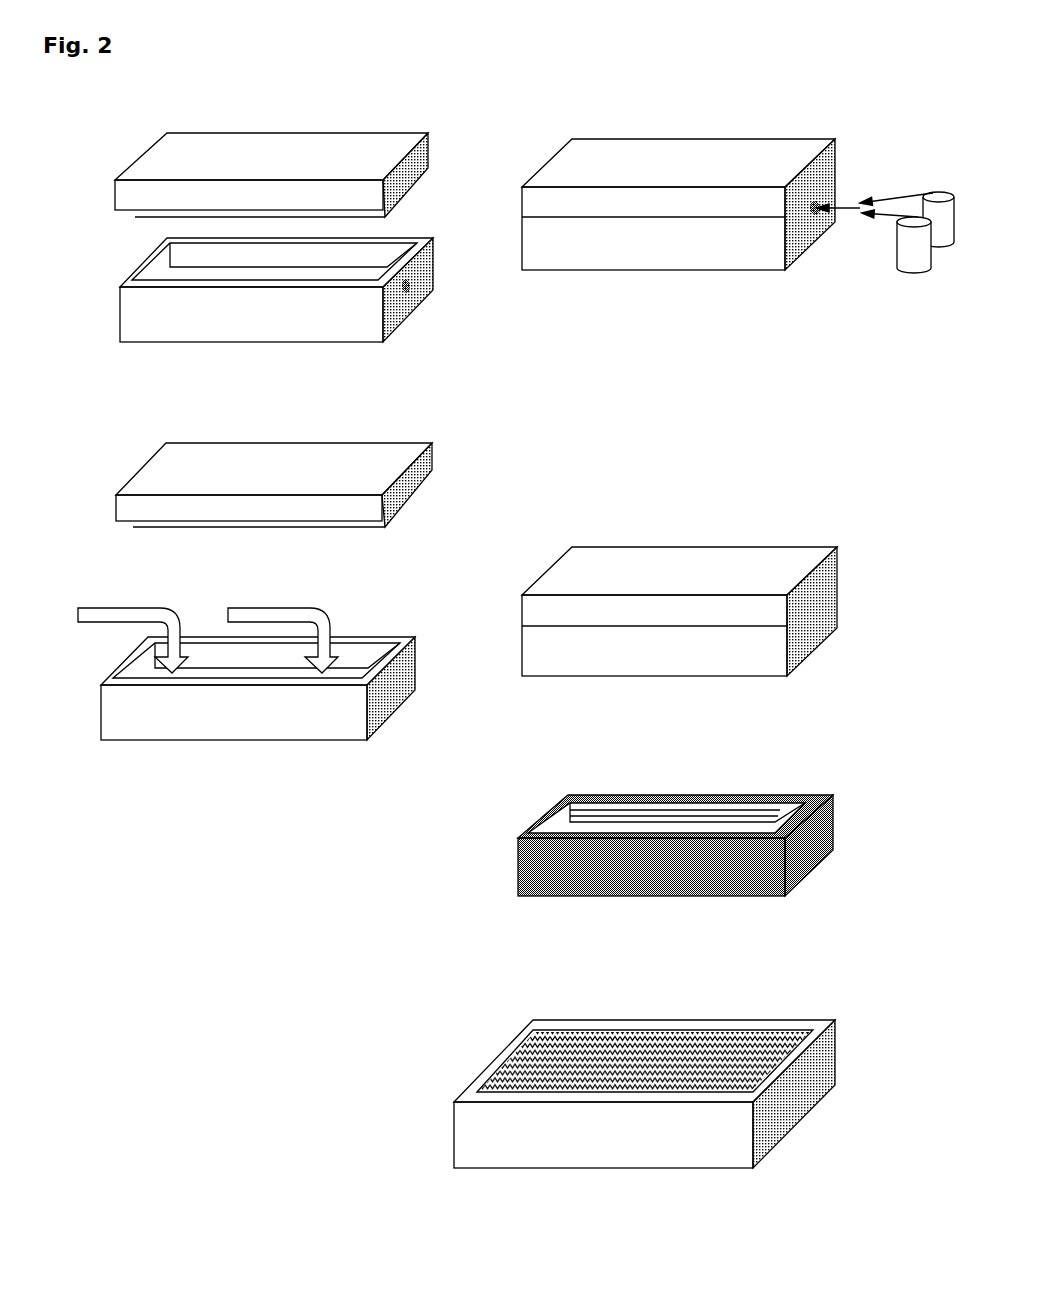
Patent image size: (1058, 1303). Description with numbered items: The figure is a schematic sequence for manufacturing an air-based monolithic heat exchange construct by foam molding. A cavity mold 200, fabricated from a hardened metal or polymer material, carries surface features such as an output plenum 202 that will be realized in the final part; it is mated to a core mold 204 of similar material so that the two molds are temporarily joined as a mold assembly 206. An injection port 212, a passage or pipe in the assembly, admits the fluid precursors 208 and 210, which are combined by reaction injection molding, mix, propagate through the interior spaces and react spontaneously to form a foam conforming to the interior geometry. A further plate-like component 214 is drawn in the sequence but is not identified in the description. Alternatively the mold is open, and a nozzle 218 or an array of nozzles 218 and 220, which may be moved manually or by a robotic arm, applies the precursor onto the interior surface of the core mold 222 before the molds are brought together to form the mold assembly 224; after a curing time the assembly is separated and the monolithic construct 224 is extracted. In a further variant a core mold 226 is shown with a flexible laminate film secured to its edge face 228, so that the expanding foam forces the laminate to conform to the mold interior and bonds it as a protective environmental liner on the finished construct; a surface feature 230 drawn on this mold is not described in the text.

The cavity mold 200 is at (334, 130).
The output plenum 202 is at (420, 180).
The core mold 204 is at (440, 277).
The mold assembly 206 is at (577, 133).
The fluid precursor 208 is at (936, 190).
The fluid precursor 210 is at (897, 240).
The injection port 212 is at (817, 206).
The top plate 214 is at (335, 443).
The nozzle 218 is at (140, 607).
The nozzle 220 is at (268, 608).
The core mold 222 is at (427, 675).
The monolithic construct 224 is at (514, 600).
The core mold 226 is at (440, 1130).
The edge face 228 is at (782, 1037).
The surface layer 230 is at (680, 1027).